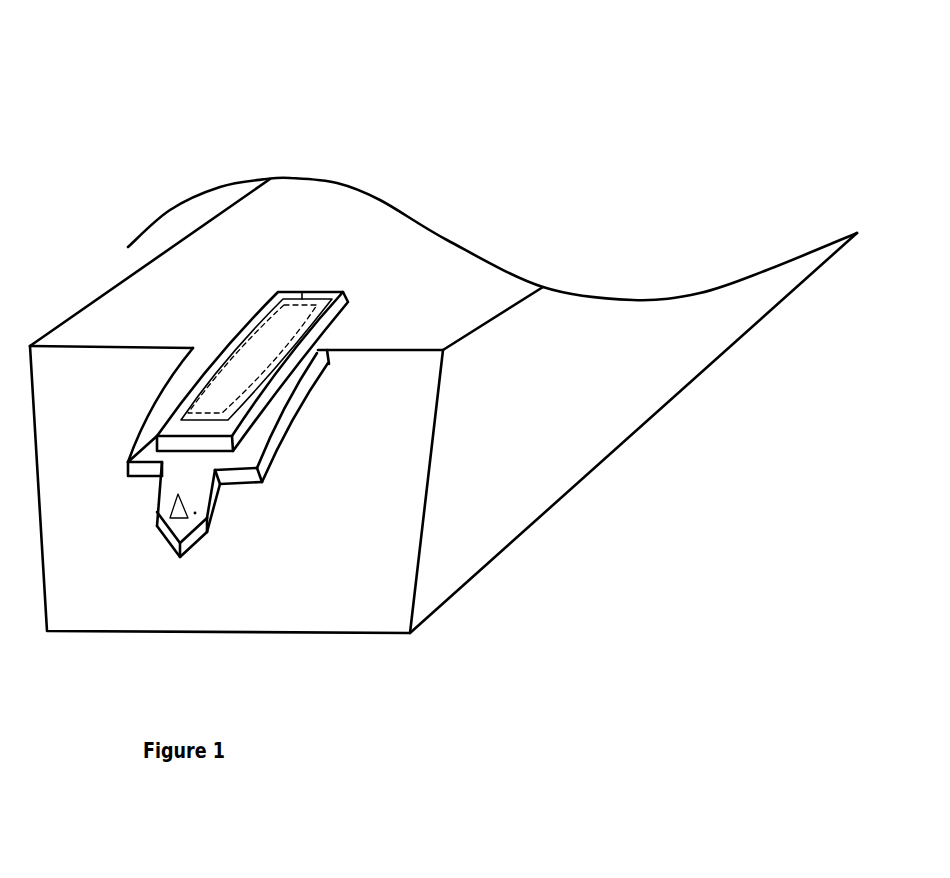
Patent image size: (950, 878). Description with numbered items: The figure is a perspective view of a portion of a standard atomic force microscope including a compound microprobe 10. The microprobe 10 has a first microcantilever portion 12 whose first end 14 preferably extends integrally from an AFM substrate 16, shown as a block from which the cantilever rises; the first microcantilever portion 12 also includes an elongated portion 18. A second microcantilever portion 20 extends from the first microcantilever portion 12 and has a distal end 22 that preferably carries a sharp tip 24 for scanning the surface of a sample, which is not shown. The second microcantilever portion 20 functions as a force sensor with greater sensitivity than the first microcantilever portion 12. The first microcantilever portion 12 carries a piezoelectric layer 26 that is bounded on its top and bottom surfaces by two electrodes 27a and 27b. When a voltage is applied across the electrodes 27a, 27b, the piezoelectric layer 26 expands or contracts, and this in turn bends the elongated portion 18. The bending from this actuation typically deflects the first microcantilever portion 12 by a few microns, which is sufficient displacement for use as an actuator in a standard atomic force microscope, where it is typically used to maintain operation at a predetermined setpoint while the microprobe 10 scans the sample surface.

The compound microprobe 10 is at (433, 98).
The first microcantilever portion 12 is at (290, 418).
The first end 14 is at (333, 367).
The AFM substrate 16 is at (123, 317).
The elongated portion 18 is at (270, 453).
The second microcantilever portion 20 is at (222, 512).
The distal end 22 is at (192, 551).
The sharp tip 24 is at (178, 493).
The piezoelectric layer 26 is at (345, 293).
The electrode 27a is at (302, 297).
The electrode 27b is at (222, 327).